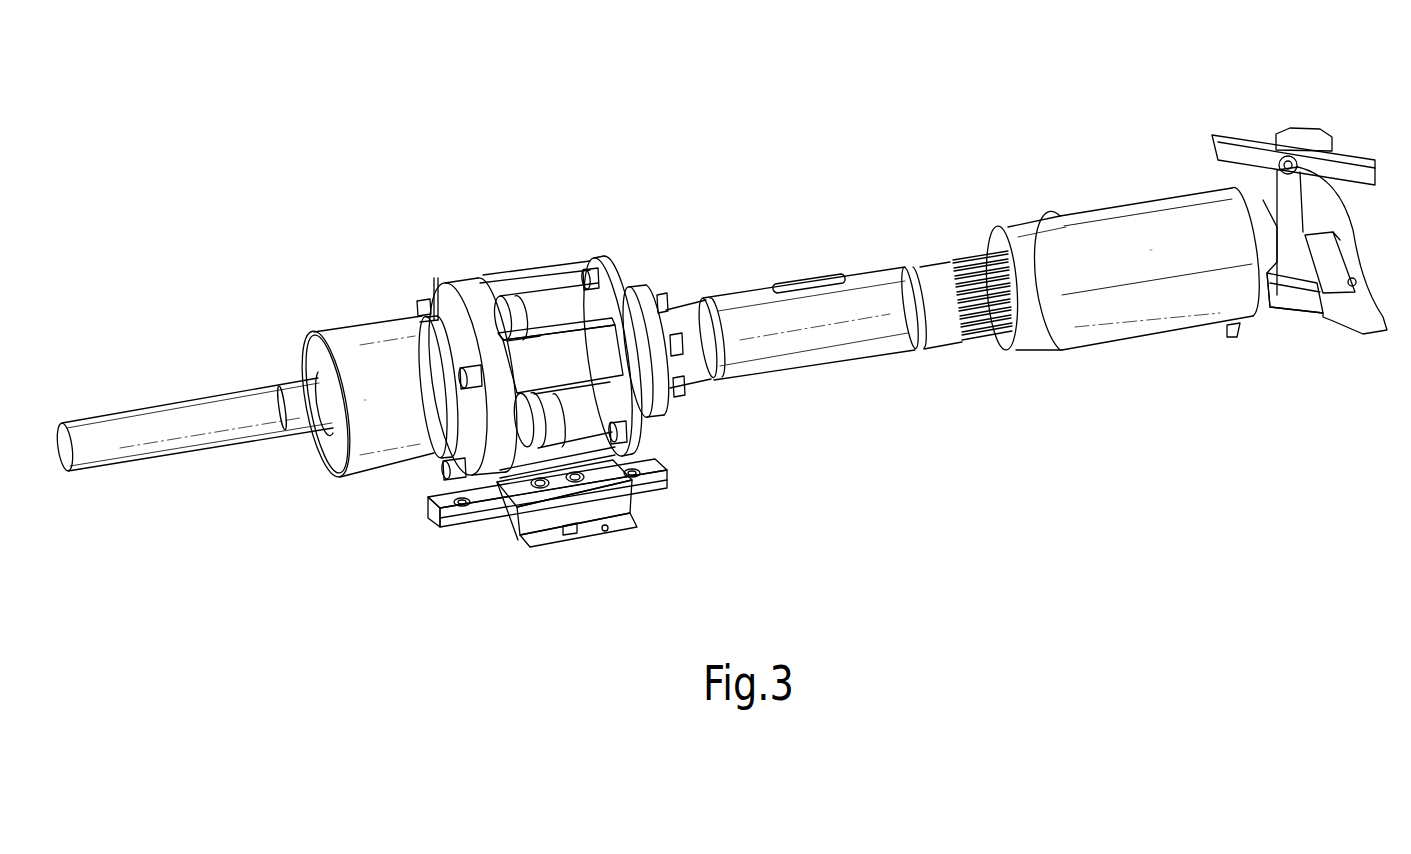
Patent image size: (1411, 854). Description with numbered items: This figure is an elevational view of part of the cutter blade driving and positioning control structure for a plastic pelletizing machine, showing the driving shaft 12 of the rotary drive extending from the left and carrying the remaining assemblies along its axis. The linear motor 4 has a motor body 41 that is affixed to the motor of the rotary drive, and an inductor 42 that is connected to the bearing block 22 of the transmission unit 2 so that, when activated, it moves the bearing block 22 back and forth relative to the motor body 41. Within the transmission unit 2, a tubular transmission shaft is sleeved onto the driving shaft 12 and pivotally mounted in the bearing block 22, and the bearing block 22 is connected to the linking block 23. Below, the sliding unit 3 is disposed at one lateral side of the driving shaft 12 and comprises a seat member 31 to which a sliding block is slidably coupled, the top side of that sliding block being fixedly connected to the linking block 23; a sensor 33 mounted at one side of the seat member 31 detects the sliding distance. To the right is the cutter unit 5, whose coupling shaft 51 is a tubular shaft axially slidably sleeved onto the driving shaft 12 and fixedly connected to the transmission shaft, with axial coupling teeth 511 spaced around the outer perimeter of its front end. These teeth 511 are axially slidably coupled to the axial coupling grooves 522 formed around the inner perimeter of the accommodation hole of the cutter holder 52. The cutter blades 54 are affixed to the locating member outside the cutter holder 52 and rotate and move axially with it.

The driving shaft 12 is at (180, 425).
The transmission unit 2 is at (542, 266).
The bearing block 22 is at (613, 283).
The linking block 23 is at (466, 288).
The sliding unit 3 is at (524, 528).
The seat member 31 is at (440, 510).
The sensor 33 is at (605, 540).
The linear motor 4 is at (356, 314).
The motor body 41 is at (355, 325).
The inductor 42 is at (420, 305).
The cutter unit 5 is at (1114, 198).
The coupling shaft 51 is at (848, 365).
The axial coupling teeth 511 is at (978, 260).
The cutter holder 52 is at (1077, 228).
The axial coupling grooves 522 is at (990, 253).
The cutter blades 54 is at (1337, 170).